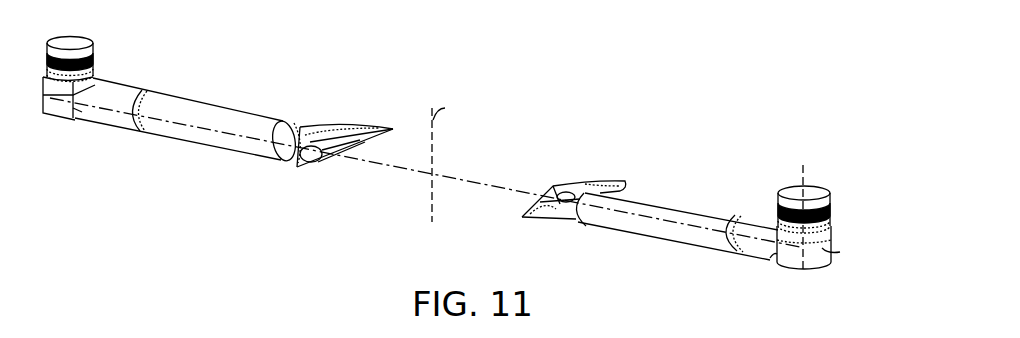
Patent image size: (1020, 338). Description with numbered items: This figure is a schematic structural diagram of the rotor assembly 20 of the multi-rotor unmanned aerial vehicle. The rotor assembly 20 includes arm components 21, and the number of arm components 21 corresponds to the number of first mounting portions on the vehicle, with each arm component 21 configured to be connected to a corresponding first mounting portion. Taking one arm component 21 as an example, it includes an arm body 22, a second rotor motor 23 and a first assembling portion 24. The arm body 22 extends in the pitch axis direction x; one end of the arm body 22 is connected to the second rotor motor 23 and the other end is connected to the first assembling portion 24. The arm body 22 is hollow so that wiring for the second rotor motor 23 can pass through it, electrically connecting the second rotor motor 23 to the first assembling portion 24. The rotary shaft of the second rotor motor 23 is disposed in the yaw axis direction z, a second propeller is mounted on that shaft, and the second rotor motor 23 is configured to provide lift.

The rotor assembly 20 is at (810, 108).
The arm component 21 is at (199, 112).
The arm body 22 is at (672, 210).
The second rotor motor 23 is at (818, 197).
The first assembling portion 24 is at (562, 190).